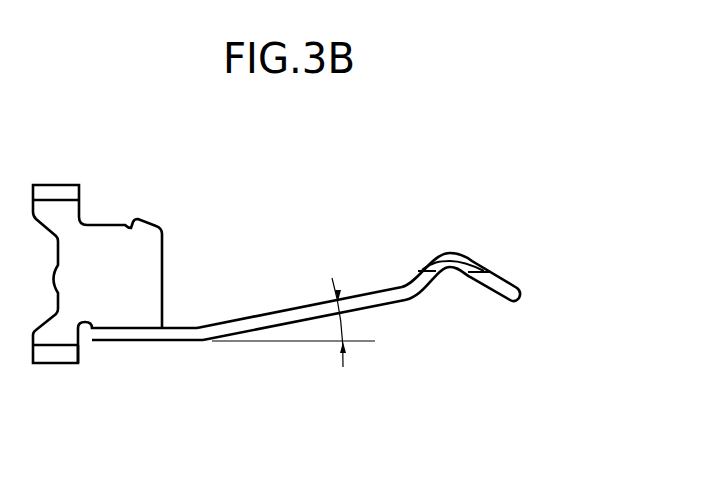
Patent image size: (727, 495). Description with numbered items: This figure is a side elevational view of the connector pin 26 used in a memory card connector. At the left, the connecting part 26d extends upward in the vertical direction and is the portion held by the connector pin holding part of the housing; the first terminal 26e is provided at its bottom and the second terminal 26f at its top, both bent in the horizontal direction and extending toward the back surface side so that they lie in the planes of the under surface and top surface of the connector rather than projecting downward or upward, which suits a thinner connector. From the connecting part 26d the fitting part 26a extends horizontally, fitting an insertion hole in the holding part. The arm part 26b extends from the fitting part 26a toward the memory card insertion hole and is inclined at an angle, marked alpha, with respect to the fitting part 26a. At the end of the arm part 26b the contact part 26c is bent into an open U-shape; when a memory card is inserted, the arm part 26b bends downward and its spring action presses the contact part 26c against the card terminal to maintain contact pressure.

The connector pin 26 is at (326, 197).
The fitting part 26a is at (130, 341).
The arm part 26b is at (271, 322).
The contact part 26c is at (458, 252).
The connecting part 26d is at (154, 257).
The first terminal 26e is at (55, 363).
The second terminal 26f is at (57, 190).